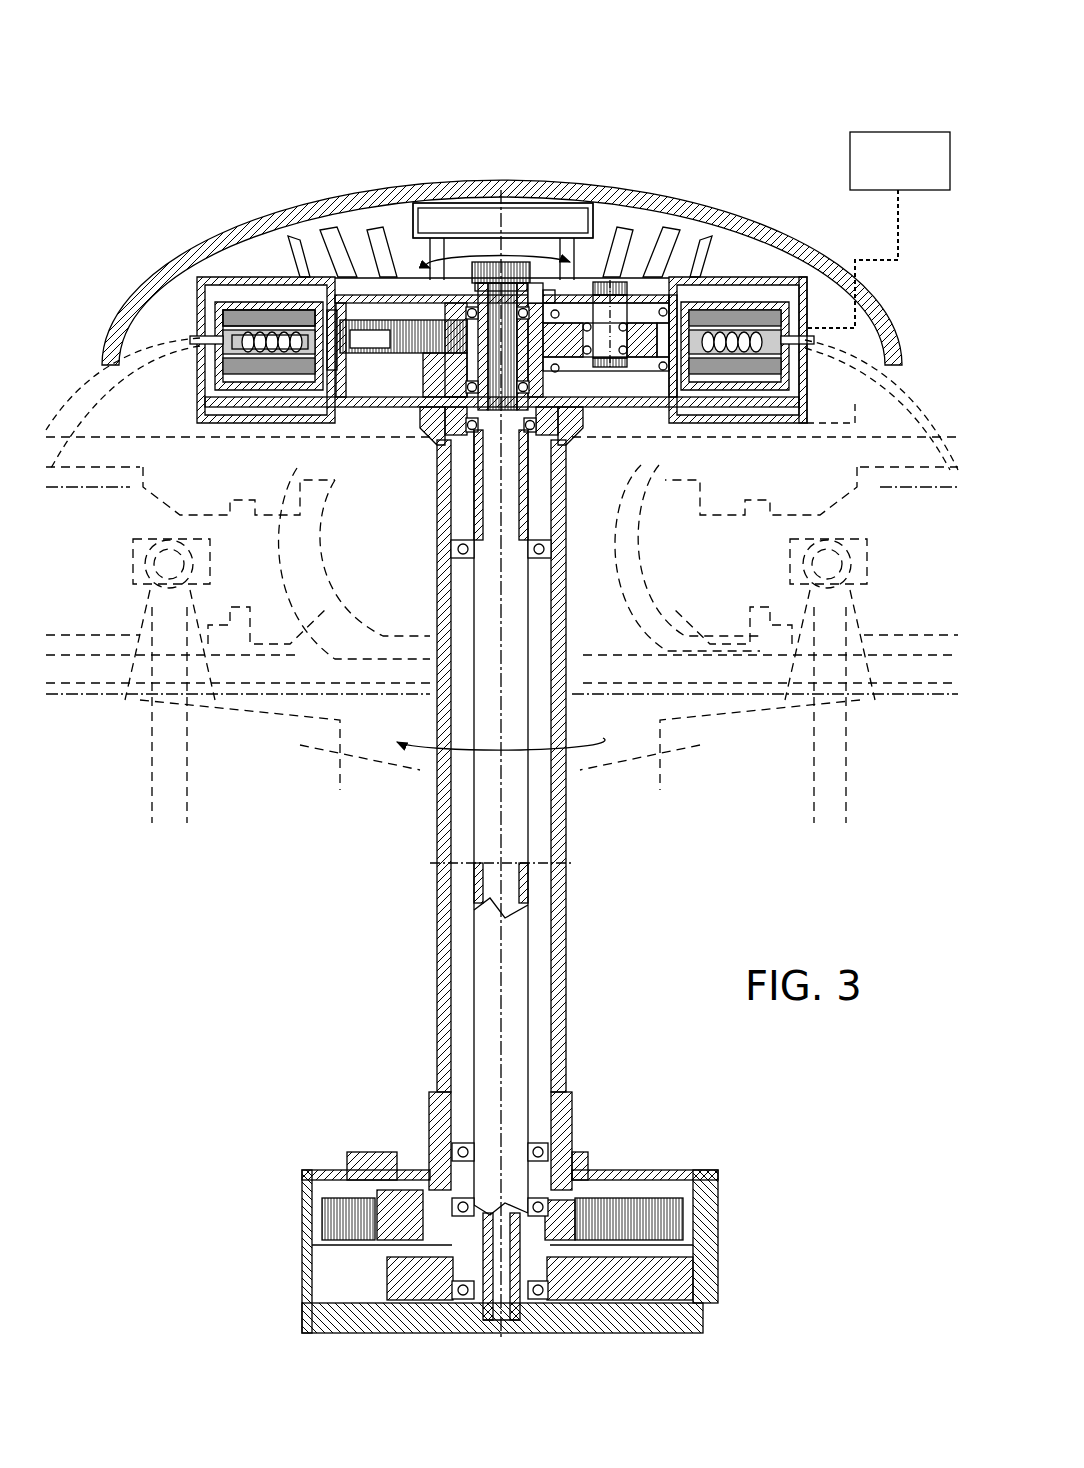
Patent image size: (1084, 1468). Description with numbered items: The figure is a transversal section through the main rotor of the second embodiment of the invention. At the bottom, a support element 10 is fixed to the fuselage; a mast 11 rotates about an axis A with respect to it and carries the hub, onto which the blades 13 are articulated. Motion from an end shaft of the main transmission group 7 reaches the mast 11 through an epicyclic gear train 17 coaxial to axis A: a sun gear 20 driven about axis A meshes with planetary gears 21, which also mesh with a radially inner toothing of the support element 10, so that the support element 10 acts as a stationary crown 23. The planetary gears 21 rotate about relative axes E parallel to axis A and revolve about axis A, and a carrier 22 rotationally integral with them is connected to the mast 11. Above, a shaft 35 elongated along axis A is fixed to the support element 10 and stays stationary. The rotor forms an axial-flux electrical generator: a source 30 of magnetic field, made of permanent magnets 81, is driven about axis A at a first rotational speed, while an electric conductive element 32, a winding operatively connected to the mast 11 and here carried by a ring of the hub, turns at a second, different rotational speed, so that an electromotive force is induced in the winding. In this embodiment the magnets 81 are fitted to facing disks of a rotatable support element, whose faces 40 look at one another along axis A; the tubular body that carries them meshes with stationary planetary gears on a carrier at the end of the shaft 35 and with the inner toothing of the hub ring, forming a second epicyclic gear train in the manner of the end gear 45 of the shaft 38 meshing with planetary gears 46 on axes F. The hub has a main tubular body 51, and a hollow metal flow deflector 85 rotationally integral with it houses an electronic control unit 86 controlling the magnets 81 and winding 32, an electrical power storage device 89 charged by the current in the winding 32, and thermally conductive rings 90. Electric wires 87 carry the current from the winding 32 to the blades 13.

The main transmission group 7 is at (544, 1251).
The support element 10 is at (587, 1323).
The mast 11 is at (558, 927).
The blades 13 is at (87, 717).
The epicyclic gear train 17 is at (690, 1183).
The sun gear 20 is at (437, 1232).
The planetary gears 21 is at (352, 1218).
The carrier 22 is at (347, 1168).
The stationary crown 23 is at (683, 1218).
The source of magnetic field 30 is at (234, 276).
The electric conductive element 32 is at (275, 362).
The shaft 35 is at (512, 955).
The shaft 38 is at (507, 313).
The faces 40 is at (245, 368).
The end gear 45 is at (510, 378).
The planetary gears 46 is at (392, 270).
The main tubular body 51 is at (845, 425).
The permanent magnets 81 is at (238, 313).
The flow deflector 85 is at (158, 247).
The electronic control unit 86 is at (450, 222).
The electric wires 87 is at (469, 404).
The electrical power storage device 89 is at (855, 165).
The thermally conductive rings 90 is at (283, 247).
The axis A is at (530, 590).
The axes E is at (372, 1250).
The axes F is at (561, 465).